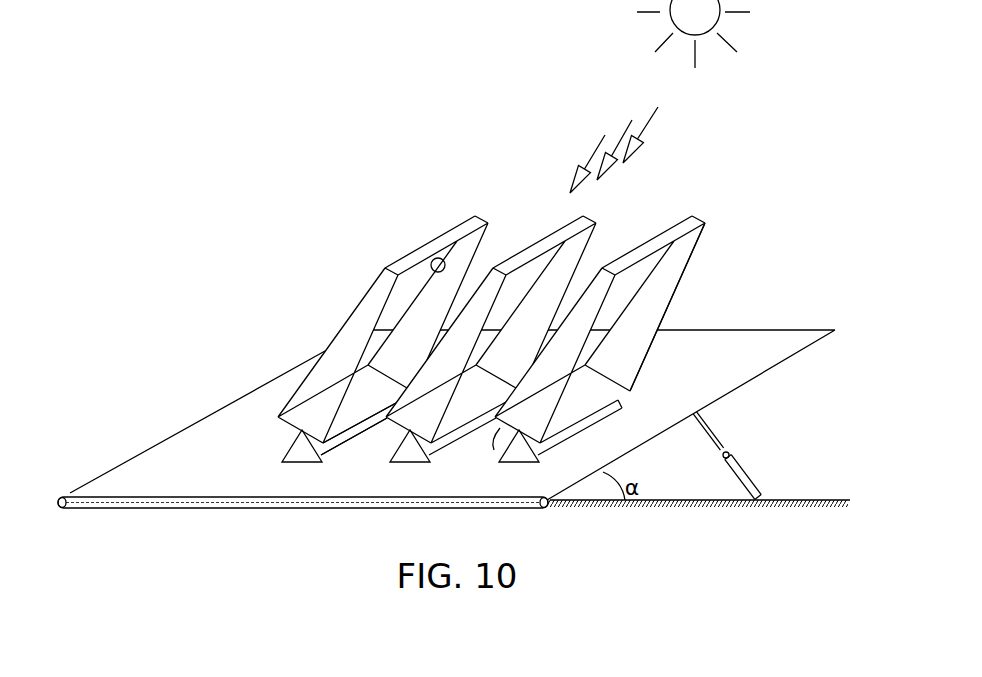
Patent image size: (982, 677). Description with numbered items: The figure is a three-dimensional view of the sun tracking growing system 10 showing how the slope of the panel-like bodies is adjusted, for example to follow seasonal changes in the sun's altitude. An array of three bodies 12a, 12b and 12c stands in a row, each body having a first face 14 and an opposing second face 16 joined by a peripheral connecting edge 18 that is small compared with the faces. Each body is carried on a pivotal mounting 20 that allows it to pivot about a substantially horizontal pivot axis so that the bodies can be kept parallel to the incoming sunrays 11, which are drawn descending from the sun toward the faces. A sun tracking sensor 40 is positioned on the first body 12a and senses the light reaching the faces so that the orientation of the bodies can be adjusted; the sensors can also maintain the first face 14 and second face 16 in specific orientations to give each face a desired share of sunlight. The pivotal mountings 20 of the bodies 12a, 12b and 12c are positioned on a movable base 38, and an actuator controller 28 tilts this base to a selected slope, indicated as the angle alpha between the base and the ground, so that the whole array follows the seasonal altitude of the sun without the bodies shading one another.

The sun tracking growing system 10 is at (431, 135).
The sunray 11 is at (597, 153).
The body 12a is at (383, 268).
The body 12b is at (540, 238).
The body 12c is at (705, 232).
The first face 14 is at (325, 350).
The second face 16 is at (333, 412).
The peripheral connecting edge 18 is at (680, 268).
The pivotal mounting 20 is at (293, 457).
The actuator controller 28 is at (740, 462).
The movable base 38 is at (800, 355).
The sun tracking sensor 40 is at (439, 262).